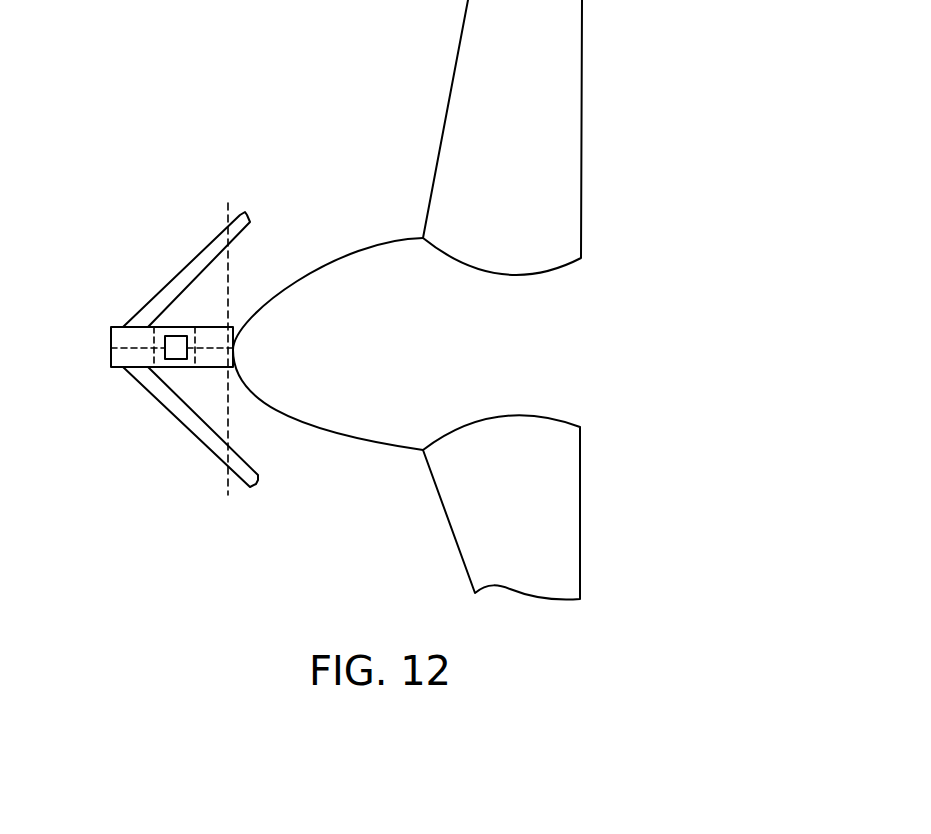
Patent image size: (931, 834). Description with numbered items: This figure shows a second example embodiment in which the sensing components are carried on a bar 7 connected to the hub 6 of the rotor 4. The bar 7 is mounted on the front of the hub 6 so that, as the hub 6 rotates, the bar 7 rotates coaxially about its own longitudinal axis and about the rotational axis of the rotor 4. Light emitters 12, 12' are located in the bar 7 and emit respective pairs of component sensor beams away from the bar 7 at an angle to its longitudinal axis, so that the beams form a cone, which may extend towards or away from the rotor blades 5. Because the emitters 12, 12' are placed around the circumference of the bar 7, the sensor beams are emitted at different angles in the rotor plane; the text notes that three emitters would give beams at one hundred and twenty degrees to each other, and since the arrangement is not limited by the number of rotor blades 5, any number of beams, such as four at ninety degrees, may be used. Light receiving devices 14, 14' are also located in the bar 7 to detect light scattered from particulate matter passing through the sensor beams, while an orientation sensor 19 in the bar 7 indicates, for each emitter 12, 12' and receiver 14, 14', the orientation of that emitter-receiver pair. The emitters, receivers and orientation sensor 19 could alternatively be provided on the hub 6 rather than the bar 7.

The rotor 4 is at (633, 131).
The rotor blades 5 is at (457, 50).
The hub 6 is at (380, 428).
The bar 7 is at (104, 348).
The light emitter 12 is at (173, 273).
The light emitter 12' is at (178, 425).
The light receiving device 14 is at (212, 322).
The light receiving device 14' is at (242, 349).
The orientation sensor 19 is at (176, 357).